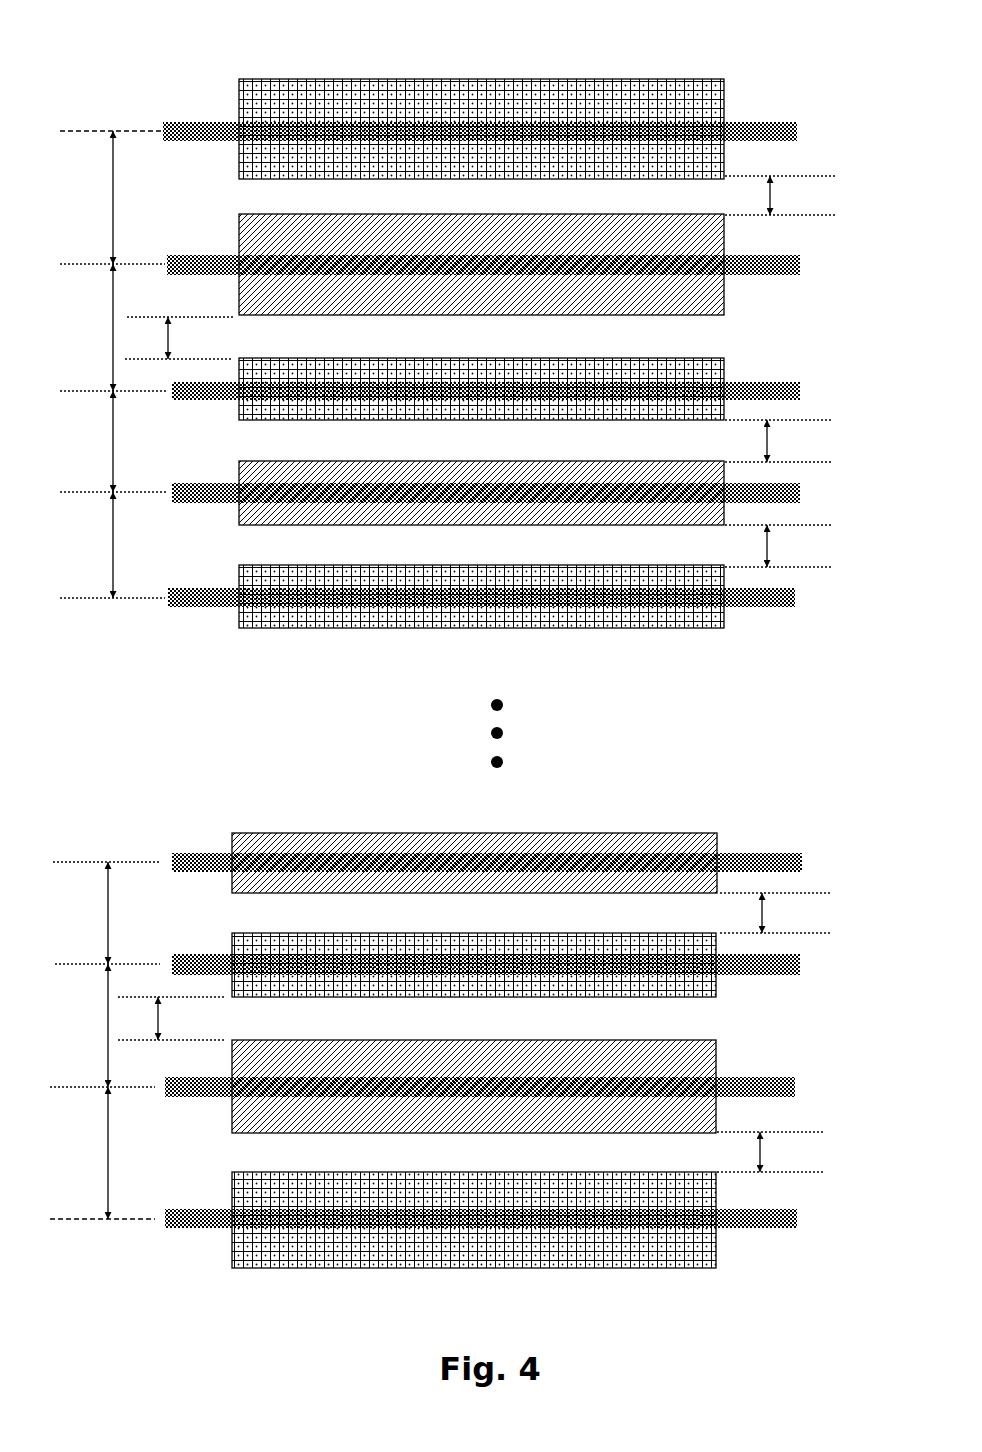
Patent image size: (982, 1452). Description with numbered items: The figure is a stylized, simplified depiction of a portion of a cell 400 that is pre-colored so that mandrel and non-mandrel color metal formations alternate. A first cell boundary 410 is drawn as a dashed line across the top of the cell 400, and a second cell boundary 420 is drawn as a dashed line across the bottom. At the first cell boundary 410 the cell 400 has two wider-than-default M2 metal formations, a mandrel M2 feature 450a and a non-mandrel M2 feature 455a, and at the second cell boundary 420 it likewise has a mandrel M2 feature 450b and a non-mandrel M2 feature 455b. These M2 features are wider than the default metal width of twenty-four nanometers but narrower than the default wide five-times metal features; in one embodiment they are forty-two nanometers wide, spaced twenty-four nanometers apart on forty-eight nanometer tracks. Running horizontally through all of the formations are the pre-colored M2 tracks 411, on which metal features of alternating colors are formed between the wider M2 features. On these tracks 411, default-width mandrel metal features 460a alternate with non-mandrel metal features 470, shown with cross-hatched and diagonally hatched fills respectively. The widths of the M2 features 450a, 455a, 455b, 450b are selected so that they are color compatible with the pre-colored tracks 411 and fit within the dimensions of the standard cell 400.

The cell 400 is at (226, 33).
The cell boundary 410 is at (143, 128).
The M2 tracks 411 is at (193, 608).
The second cell boundary 420 is at (83, 1220).
The mandrel M2 feature 450a is at (625, 97).
The non-mandrel M2 feature 455a is at (705, 318).
The mandrel metal feature 460a is at (572, 420).
The non-mandrel metal feature 470 is at (567, 525).
The non-mandrel M2 feature 455b is at (635, 1040).
The mandrel M2 feature 450b is at (678, 1268).